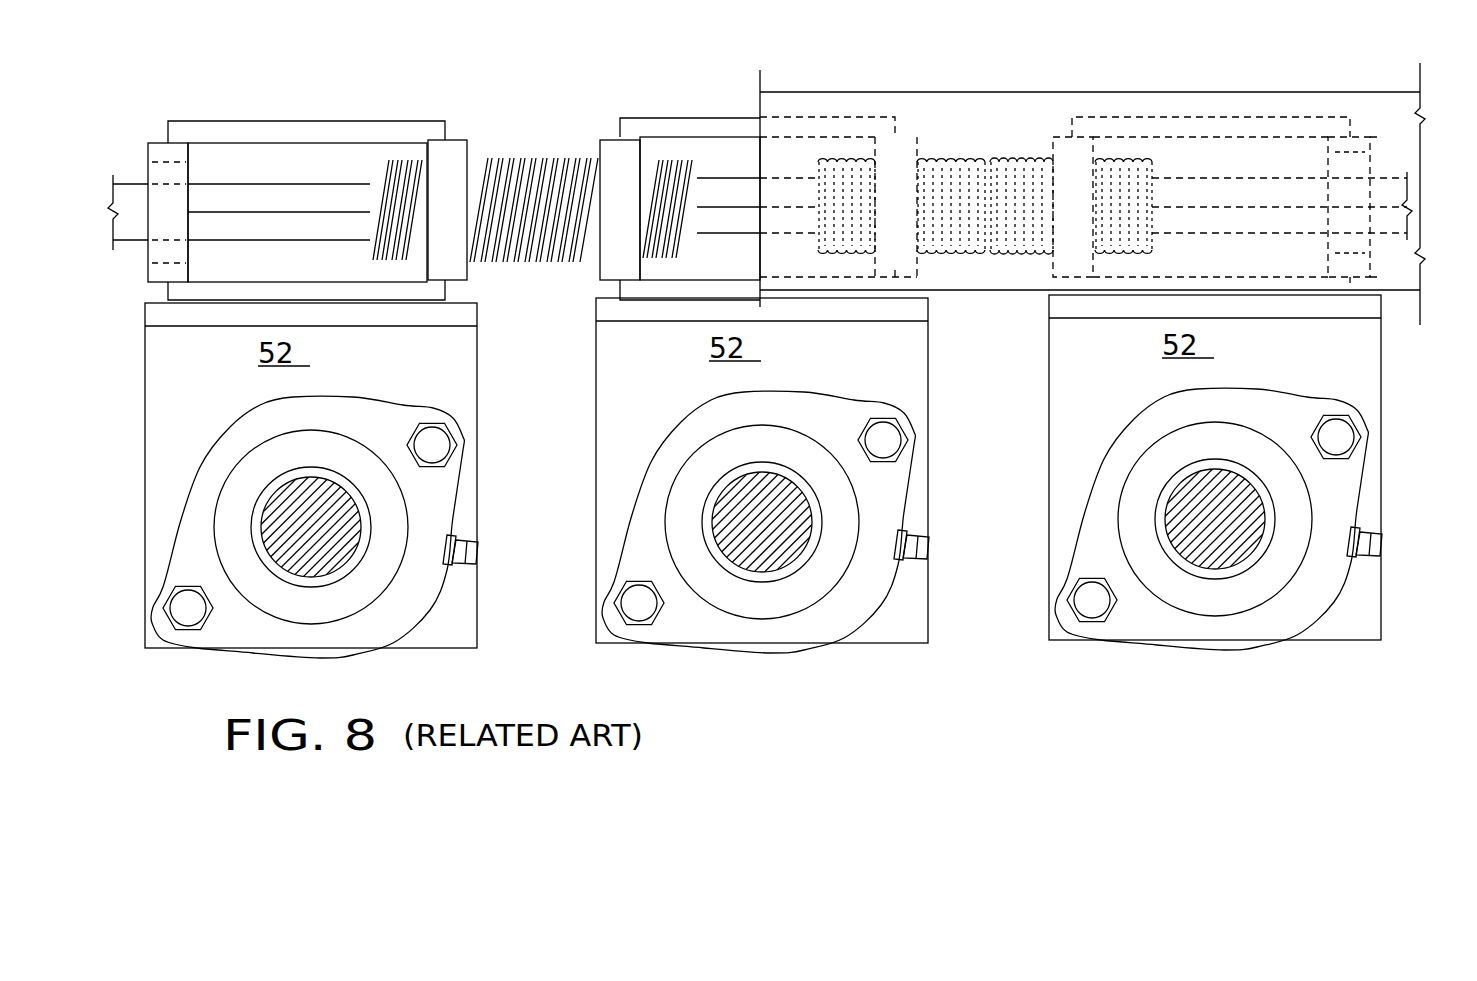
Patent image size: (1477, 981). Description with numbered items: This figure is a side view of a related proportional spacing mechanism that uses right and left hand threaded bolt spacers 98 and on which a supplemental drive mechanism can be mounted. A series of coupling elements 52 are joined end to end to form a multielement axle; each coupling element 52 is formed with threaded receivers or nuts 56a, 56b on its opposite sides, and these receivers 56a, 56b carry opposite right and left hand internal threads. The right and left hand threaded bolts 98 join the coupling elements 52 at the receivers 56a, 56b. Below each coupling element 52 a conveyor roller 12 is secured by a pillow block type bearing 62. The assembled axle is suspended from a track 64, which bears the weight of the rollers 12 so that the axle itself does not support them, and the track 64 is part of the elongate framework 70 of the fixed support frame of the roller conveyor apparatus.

The roller 12 is at (317, 543).
The coupling element 52 is at (763, 471).
The threaded receiver 56a is at (153, 140).
The threaded receiver 56b is at (455, 138).
The pillow block type bearing 62 is at (427, 605).
The track 64 is at (800, 90).
The elongate framework 70 is at (1165, 88).
The right and left hand threaded bolt spacer 98 is at (533, 160).